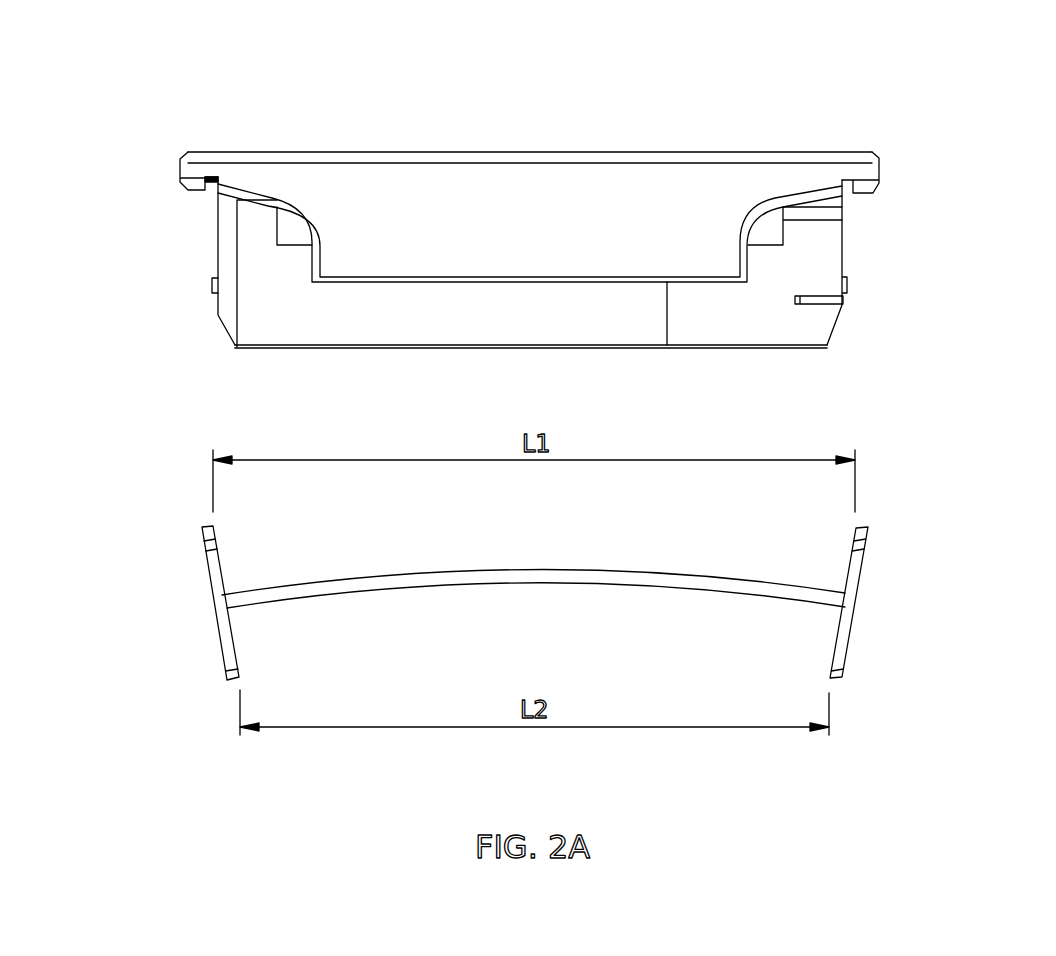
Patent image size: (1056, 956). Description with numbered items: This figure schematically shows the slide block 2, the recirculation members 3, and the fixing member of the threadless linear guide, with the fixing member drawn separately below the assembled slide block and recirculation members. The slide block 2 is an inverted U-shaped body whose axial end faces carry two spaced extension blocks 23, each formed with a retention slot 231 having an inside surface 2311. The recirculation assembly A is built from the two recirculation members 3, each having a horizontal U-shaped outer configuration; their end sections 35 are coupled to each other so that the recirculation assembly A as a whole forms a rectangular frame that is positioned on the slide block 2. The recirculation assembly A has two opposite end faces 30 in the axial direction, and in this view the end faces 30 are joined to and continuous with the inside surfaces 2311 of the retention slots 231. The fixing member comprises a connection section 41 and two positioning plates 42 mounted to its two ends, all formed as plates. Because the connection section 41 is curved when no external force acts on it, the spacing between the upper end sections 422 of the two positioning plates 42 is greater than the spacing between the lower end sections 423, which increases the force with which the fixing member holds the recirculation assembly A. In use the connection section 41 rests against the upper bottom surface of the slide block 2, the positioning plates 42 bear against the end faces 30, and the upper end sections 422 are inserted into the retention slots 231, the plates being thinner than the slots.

The slide block 2 is at (557, 188).
The extension block 23 is at (202, 165).
The retention slot 231 is at (217, 181).
The inside surface 2311 is at (220, 187).
The end face 30 is at (217, 232).
The recirculation member 3 is at (270, 320).
The end section 35 is at (447, 318).
The recirculation assembly A is at (815, 253).
The connection section 41 is at (610, 584).
The positioning plate 42 is at (212, 589).
The upper end section 422 is at (202, 528).
The lower end section 423 is at (231, 681).